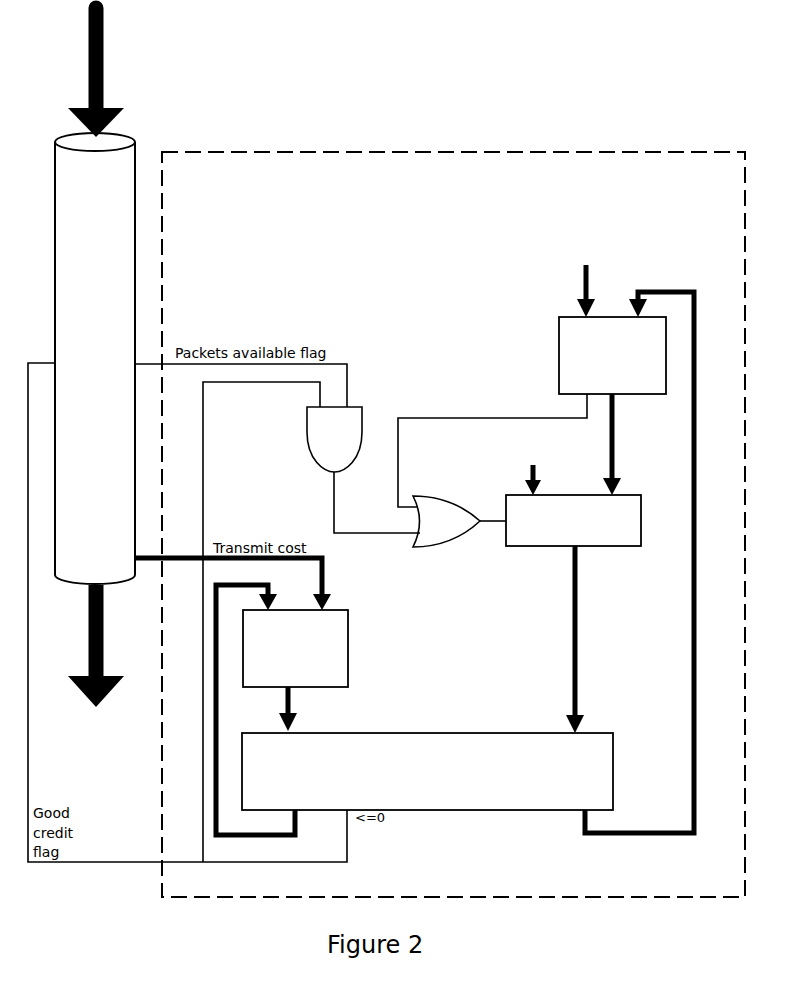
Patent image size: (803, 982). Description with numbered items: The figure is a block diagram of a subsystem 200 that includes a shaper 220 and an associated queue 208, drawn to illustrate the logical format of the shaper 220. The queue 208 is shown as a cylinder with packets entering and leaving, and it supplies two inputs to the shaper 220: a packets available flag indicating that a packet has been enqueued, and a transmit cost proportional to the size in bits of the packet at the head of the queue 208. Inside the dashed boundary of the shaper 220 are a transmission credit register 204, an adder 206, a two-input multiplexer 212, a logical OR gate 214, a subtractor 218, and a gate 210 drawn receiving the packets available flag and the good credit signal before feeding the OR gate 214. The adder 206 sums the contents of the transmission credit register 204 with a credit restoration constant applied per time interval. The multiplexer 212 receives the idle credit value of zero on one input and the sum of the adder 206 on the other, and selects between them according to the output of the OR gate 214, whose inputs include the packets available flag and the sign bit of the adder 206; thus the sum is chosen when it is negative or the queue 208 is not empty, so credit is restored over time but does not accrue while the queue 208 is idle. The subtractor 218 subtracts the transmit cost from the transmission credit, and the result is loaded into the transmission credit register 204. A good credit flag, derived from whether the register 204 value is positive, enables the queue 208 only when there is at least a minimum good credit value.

The subsystem 200 is at (264, 11).
The transmission credit register 204 is at (480, 732).
The adder 206 is at (558, 348).
The queue 208 is at (136, 150).
The AND gate 210 is at (355, 406).
The 2 input multiplexer 212 is at (612, 548).
The logical OR gate 214 is at (440, 497).
The subtractor 218 is at (320, 688).
The shaper 220 is at (465, 152).